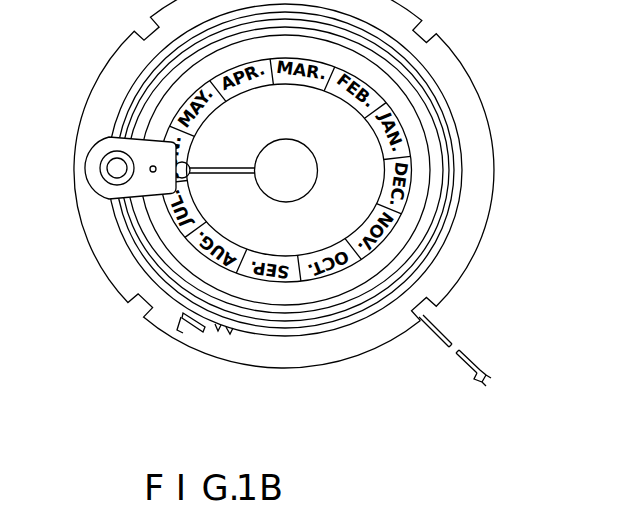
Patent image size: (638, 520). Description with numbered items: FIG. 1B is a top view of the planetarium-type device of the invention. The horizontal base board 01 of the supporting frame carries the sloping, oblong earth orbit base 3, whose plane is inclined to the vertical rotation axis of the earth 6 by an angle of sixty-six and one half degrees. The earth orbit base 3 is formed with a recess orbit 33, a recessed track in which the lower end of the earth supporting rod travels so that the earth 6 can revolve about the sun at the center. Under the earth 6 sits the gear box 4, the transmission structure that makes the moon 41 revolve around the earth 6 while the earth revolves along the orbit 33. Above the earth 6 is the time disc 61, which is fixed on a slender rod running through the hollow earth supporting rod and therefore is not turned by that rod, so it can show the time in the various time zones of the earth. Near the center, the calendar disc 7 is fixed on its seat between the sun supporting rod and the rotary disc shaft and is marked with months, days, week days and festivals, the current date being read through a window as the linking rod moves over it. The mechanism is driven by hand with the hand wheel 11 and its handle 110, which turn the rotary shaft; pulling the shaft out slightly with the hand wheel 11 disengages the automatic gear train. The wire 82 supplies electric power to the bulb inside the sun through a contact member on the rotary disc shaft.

The base board 01 is at (480, 245).
The earth orbit base 3 is at (462, 192).
The recess orbit 33 is at (452, 167).
The calendar disc 7 is at (408, 253).
The gear box 4 is at (98, 186).
The earth 6 is at (100, 168).
The time disc 61 is at (112, 163).
The moon 41 is at (150, 171).
The handle 110 is at (184, 318).
The hand wheel 11 is at (198, 327).
The wire 82 is at (229, 332).